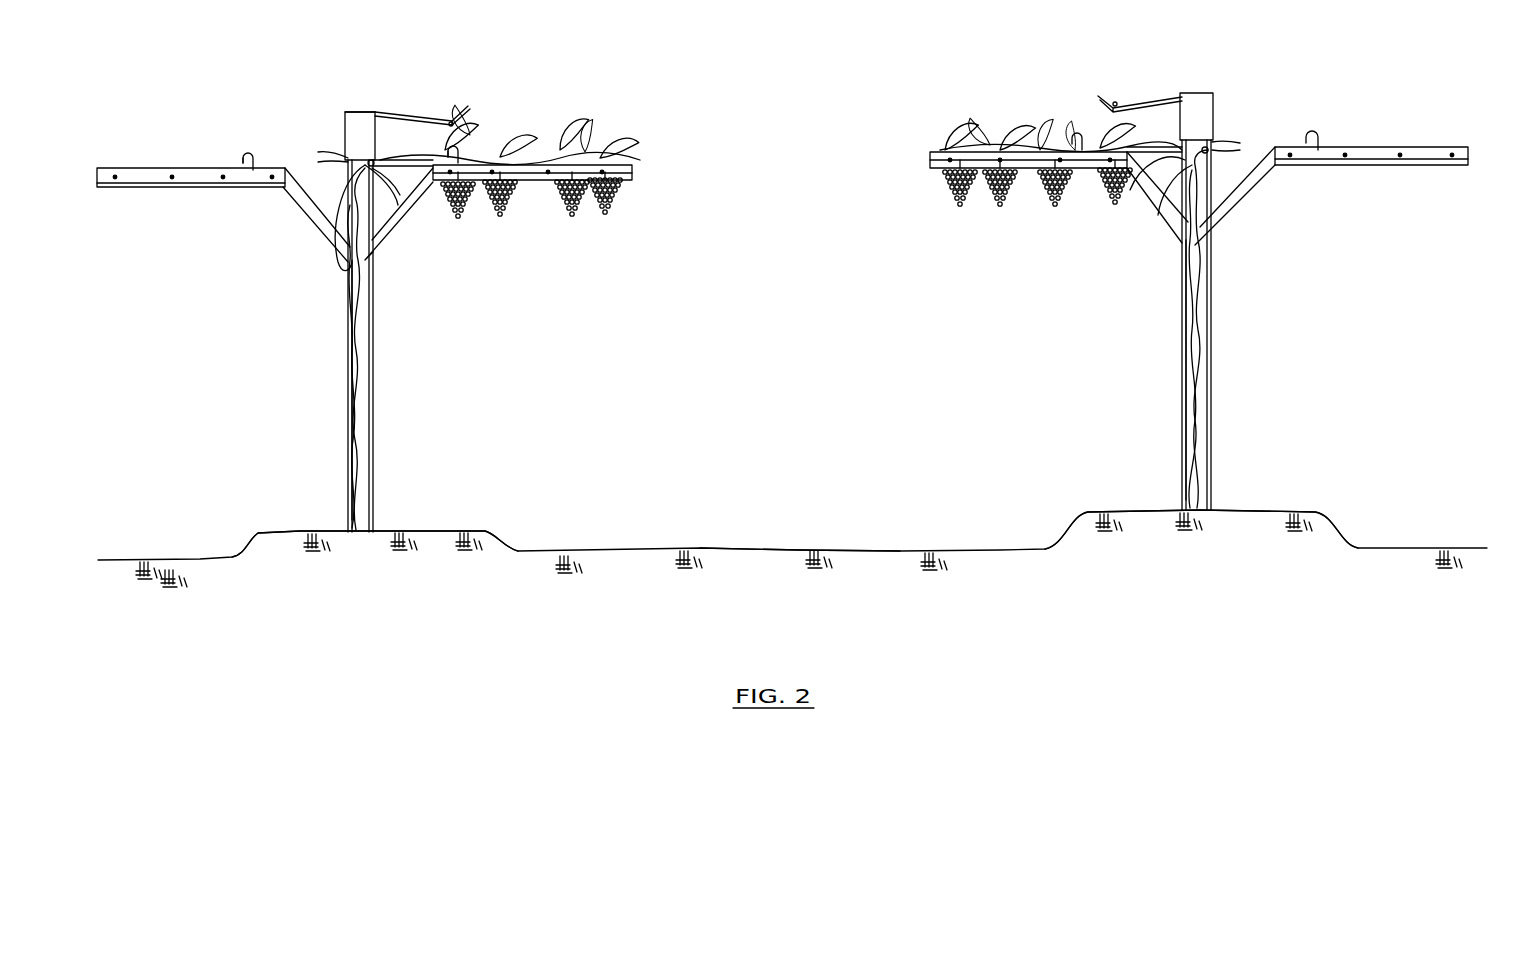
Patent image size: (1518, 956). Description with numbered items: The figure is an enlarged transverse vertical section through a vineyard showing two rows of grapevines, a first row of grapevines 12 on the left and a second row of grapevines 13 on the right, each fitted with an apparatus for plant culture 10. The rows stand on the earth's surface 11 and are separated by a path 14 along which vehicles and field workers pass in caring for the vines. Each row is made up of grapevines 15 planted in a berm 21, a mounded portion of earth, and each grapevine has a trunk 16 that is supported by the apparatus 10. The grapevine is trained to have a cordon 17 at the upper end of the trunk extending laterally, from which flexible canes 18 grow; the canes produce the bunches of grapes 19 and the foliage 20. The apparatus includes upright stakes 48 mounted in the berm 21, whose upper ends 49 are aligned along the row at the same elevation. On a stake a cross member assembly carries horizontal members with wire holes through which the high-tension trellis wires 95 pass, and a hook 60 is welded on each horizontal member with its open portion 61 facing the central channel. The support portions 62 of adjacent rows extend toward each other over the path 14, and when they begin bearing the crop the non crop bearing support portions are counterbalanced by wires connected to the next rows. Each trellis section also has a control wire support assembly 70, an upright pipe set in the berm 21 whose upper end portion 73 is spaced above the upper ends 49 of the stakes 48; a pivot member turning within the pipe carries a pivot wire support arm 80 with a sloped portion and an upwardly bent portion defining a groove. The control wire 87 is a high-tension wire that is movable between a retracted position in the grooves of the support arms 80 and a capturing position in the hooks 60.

The apparatus for plant culture 10 is at (792, 286).
The earth's surface 11 is at (592, 545).
The first row of grapevines 12 is at (792, 286).
The second row of grapevines 13 is at (1213, 284).
The path 14 is at (792, 548).
The grapevine 15 is at (355, 424).
The trunk 16 is at (362, 340).
The cordon 17 is at (352, 162).
The canes 18 is at (393, 205).
The bunches of grapes 19 is at (605, 215).
The foliage 20 is at (605, 140).
The berm 21 is at (410, 526).
The stake 48 is at (360, 275).
The upper end of stake 49 is at (373, 162).
The hook 60 is at (250, 156).
The open portion of hook 61 is at (255, 158).
The support portion 62 is at (165, 188).
The control wire support assembly 70 is at (358, 116).
The upper end portion of pipe 73 is at (363, 111).
The pivot wire support arm 80 is at (405, 117).
The control wire 87 is at (458, 110).
The trellis wires 95 is at (222, 176).